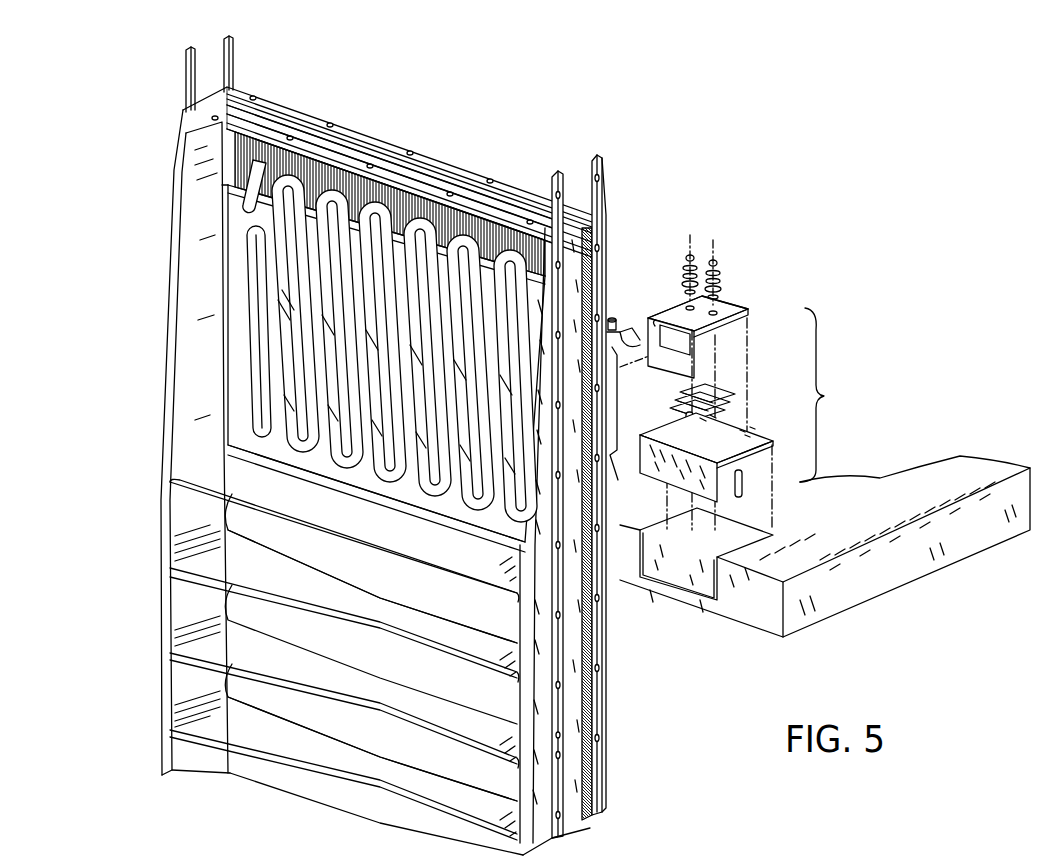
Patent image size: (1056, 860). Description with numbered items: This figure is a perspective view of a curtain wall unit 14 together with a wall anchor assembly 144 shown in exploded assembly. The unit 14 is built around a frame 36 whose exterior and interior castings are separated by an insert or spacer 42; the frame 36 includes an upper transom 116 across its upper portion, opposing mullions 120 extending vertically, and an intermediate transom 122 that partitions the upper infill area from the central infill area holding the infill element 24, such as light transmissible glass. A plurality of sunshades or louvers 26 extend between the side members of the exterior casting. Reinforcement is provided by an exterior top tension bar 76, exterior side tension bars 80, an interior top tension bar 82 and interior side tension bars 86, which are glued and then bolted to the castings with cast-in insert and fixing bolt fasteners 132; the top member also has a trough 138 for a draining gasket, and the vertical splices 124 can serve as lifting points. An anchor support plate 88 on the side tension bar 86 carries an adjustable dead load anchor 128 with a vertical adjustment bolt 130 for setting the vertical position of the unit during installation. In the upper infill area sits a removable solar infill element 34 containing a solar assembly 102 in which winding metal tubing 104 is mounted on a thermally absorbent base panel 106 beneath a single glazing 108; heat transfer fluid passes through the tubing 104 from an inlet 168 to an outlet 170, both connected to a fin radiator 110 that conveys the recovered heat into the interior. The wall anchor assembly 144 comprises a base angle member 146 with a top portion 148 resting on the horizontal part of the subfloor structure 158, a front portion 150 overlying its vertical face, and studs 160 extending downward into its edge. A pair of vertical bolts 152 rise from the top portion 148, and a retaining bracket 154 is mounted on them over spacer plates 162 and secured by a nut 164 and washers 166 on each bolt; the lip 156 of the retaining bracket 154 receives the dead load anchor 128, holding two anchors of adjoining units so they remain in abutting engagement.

The curtain wall unit 14 is at (165, 165).
The infill element 24 is at (340, 722).
The sunshades or louvers 26 is at (270, 657).
The solar infill element 34 is at (220, 259).
The frame 36 is at (165, 318).
The insert or spacer 42 is at (594, 238).
The exterior top reinforcement or tension bar 76 is at (330, 140).
The exterior side reinforcement or tension bars 80 is at (570, 800).
The interior top reinforcement or tension bar 82 is at (415, 147).
The interior side reinforcement or tension bars 86 is at (600, 695).
The anchor support plate 88 is at (636, 426).
The solar assembly 102 is at (220, 378).
The winding metal tubing 104 is at (250, 305).
The thermally absorbent base panel 106 is at (240, 186).
The single glazing 108 is at (232, 458).
The fin radiator 110 is at (360, 187).
The upper transom 116 is at (292, 148).
The mullions 120 is at (176, 452).
The intermediate transom 122 is at (358, 503).
The vertical splices 124 is at (232, 44).
The adjustable dead load anchor 128 is at (626, 340).
The vertical adjustment bolt 130 is at (611, 318).
The cast-in insert and fixing bolt fasteners 132 is at (560, 736).
The trough 138 is at (462, 183).
The wall anchor assembly 144 is at (828, 395).
The base angle member 146 is at (762, 430).
The top portion 148 is at (758, 445).
The front portion 150 is at (672, 480).
The vertical bolts 152 is at (688, 432).
The retaining bracket 154 is at (745, 305).
The lip 156 is at (662, 320).
The subfloor structure 158 is at (868, 570).
The studs 160 is at (738, 485).
The spacer plates 162 is at (712, 390).
The nut 164 is at (694, 250).
The washers 166 is at (722, 288).
The inlet 168 is at (245, 230).
The outlet 170 is at (248, 210).